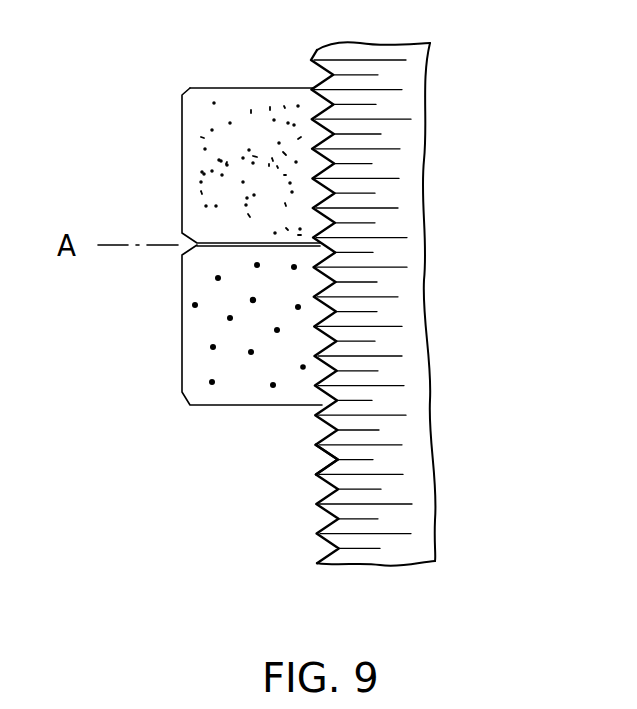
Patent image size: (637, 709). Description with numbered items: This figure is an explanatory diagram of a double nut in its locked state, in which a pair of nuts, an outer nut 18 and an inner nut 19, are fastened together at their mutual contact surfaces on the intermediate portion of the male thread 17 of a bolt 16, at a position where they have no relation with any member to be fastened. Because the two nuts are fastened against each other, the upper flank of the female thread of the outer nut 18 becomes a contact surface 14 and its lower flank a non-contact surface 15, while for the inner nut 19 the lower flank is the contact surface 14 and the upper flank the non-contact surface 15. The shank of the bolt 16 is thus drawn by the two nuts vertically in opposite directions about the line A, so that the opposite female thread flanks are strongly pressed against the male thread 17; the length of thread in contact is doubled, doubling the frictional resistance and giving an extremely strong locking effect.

The contact surface 14 is at (324, 117).
The non-contact surface 15 is at (340, 146).
The bolt 16 is at (360, 338).
The male thread 17 is at (322, 464).
The outer nut 18 is at (182, 156).
The inner nut 19 is at (178, 339).